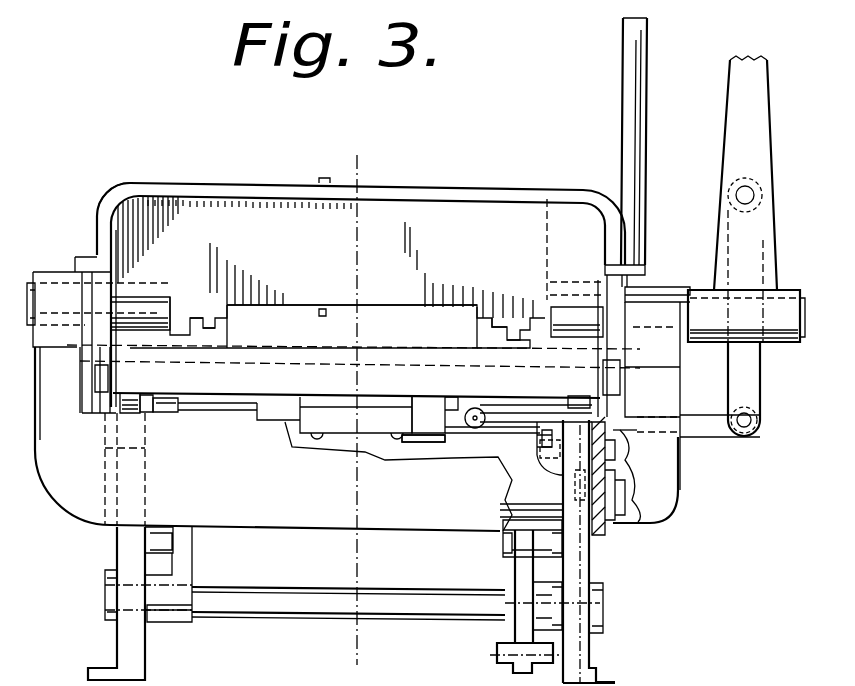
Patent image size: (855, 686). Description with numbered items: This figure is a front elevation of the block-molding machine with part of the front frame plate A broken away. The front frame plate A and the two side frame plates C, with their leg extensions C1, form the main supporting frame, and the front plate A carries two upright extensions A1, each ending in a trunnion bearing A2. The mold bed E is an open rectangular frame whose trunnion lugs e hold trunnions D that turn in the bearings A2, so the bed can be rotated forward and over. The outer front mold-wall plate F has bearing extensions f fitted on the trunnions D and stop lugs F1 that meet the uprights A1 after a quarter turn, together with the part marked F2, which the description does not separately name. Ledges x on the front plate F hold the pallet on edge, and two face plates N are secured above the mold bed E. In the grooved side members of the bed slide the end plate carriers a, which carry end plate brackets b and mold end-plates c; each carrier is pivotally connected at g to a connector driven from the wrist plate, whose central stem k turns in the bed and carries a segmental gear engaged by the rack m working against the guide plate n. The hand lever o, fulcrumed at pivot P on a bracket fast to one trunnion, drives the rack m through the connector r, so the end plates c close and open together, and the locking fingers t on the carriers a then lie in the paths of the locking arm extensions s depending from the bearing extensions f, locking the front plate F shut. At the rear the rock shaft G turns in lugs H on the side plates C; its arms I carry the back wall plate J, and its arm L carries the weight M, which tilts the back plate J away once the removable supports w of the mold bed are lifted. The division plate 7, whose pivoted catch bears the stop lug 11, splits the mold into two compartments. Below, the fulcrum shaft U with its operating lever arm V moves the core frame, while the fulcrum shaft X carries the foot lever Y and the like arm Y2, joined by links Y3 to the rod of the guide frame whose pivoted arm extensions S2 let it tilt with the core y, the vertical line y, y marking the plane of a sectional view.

The front frame plate A is at (652, 548).
The upright extension A1 is at (687, 370).
The trunnion bearing A2 is at (55, 280).
The side frame plate C is at (598, 532).
The leg extension C1 is at (118, 638).
The trunnion D is at (32, 328).
The mold bed E is at (272, 355).
The outer front mold-wall plate F is at (104, 205).
The stop lug F1 is at (100, 267).
The cover flange F2 is at (616, 276).
The fulcrum shaft G is at (230, 412).
The lug H is at (168, 412).
The arm I is at (148, 412).
The back wall plate J is at (128, 185).
The arm L is at (418, 442).
The weight M is at (455, 443).
The face plate N is at (285, 305).
The fulcrum pivot P is at (736, 197).
The arm extension S2 is at (107, 413).
The fulcrum shaft U is at (645, 520).
The operating lever arm V is at (637, 127).
The fulcrum shaft X is at (380, 596).
The foot lever Y is at (510, 632).
The arm Y2 is at (182, 562).
The link Y3 is at (162, 537).
The end plate carrier a is at (625, 370).
The end plate bracket b is at (525, 345).
The mold end-plate c is at (500, 322).
The trunnion lug e is at (150, 300).
The bearing extension f is at (100, 298).
The pivot g is at (700, 295).
The stem k is at (561, 461).
The rack m is at (430, 419).
The guide plate n is at (356, 418).
The hand lever o is at (745, 246).
The connector r is at (710, 428).
The locking arm extension s is at (357, 377).
The locking finger extension t is at (88, 413).
The support w is at (140, 400).
The ledge x is at (208, 322).
The section line y is at (349, 406).
The division plate 7 is at (322, 308).
The stop lug 11 is at (324, 181).